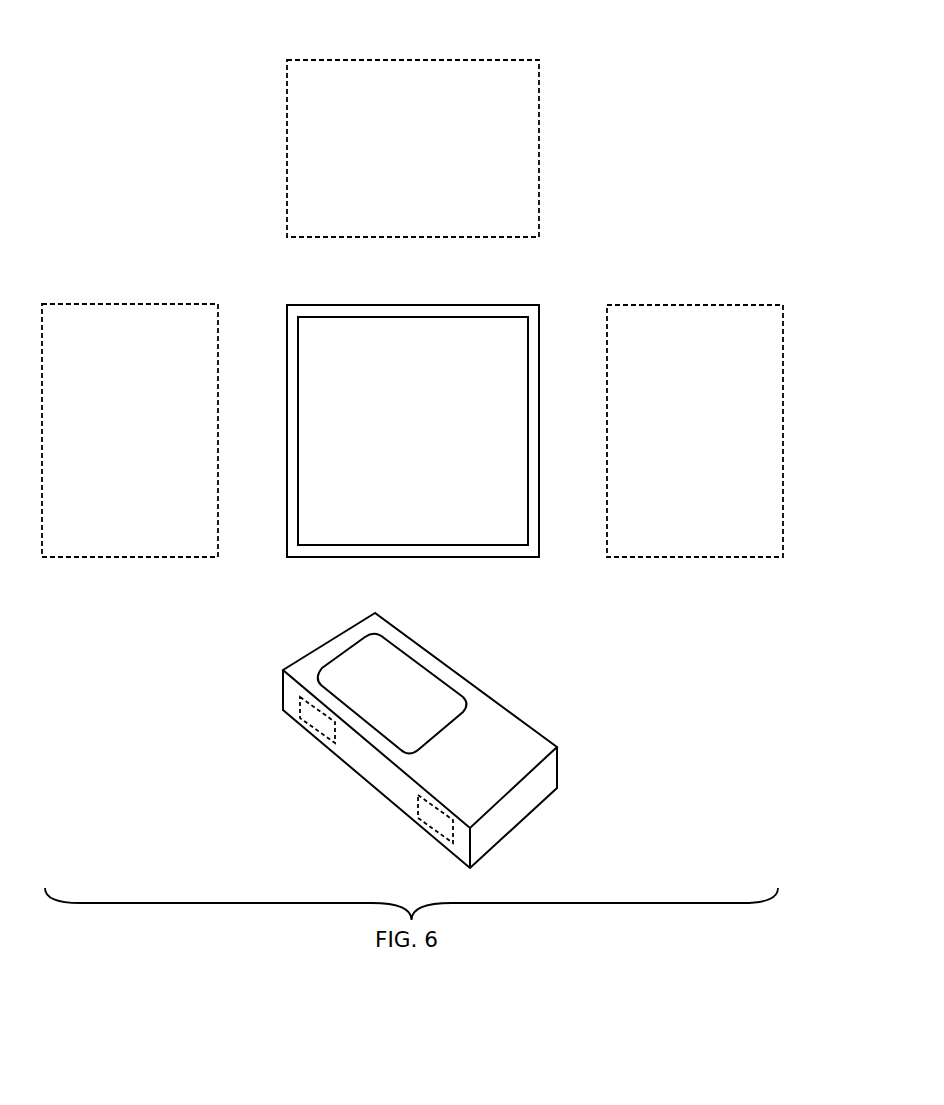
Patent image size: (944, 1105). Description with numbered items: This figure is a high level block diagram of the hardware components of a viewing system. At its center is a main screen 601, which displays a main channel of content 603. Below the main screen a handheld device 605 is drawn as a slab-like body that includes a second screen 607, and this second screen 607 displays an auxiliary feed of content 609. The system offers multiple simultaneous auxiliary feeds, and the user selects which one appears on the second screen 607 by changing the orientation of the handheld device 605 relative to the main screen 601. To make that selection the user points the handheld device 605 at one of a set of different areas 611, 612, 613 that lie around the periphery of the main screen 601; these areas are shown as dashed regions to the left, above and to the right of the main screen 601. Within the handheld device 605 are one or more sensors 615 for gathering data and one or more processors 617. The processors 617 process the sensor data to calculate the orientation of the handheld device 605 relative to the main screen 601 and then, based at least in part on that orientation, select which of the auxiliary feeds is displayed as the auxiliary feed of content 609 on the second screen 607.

The main screen 601 is at (393, 403).
The main channel of content 603 is at (315, 363).
The handheld device 605 is at (429, 727).
The second screen 607 is at (375, 670).
The auxiliary feed of content 609 is at (380, 694).
The area around the periphery of the main screen 611 is at (100, 304).
The area around the periphery of the main screen 612 is at (341, 60).
The area around the periphery of the main screen 613 is at (688, 305).
The sensors 615 is at (313, 718).
The processors 617 is at (433, 820).